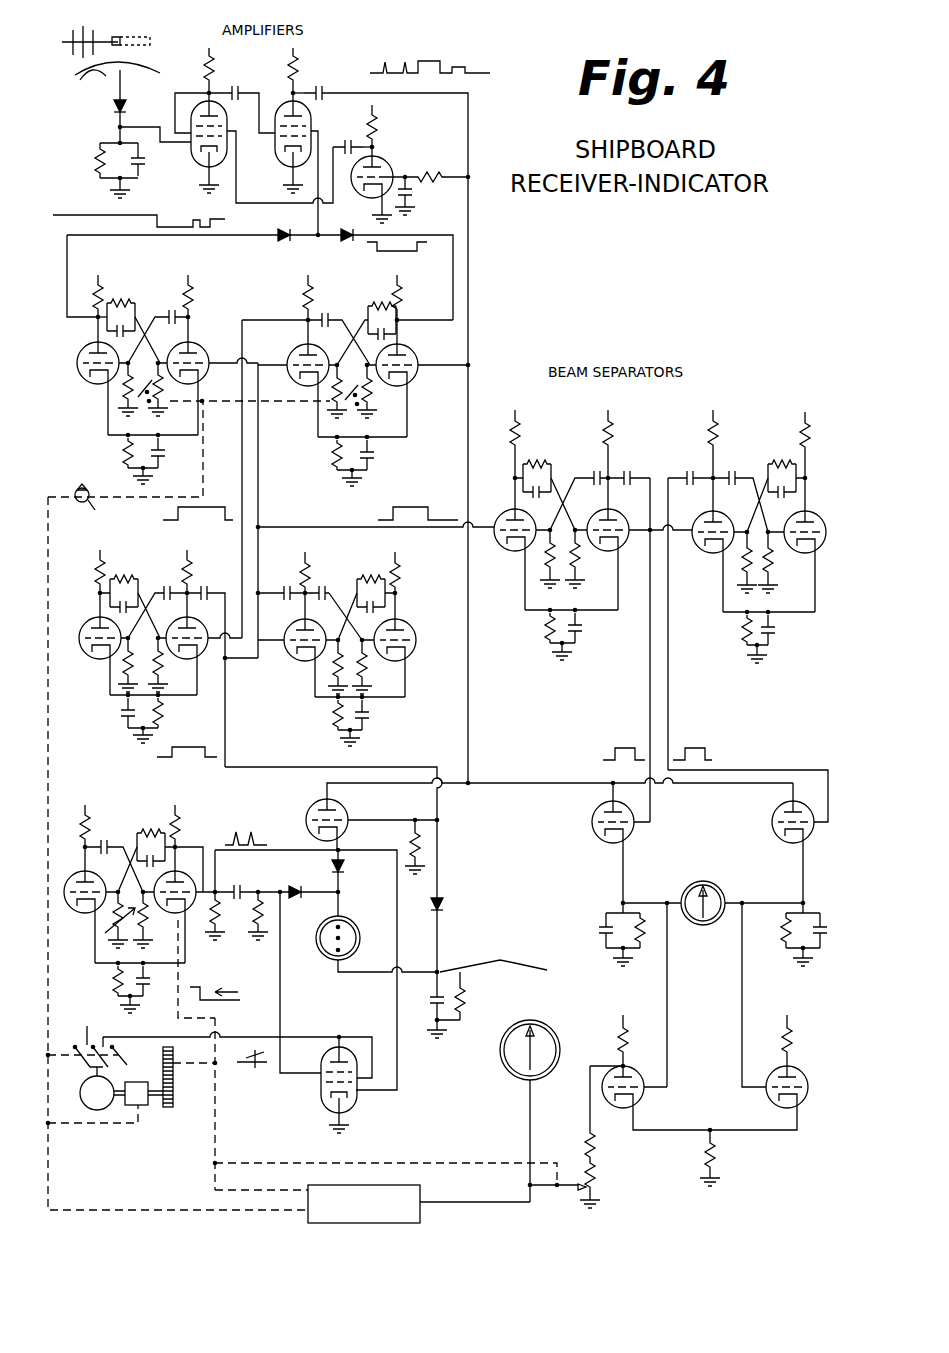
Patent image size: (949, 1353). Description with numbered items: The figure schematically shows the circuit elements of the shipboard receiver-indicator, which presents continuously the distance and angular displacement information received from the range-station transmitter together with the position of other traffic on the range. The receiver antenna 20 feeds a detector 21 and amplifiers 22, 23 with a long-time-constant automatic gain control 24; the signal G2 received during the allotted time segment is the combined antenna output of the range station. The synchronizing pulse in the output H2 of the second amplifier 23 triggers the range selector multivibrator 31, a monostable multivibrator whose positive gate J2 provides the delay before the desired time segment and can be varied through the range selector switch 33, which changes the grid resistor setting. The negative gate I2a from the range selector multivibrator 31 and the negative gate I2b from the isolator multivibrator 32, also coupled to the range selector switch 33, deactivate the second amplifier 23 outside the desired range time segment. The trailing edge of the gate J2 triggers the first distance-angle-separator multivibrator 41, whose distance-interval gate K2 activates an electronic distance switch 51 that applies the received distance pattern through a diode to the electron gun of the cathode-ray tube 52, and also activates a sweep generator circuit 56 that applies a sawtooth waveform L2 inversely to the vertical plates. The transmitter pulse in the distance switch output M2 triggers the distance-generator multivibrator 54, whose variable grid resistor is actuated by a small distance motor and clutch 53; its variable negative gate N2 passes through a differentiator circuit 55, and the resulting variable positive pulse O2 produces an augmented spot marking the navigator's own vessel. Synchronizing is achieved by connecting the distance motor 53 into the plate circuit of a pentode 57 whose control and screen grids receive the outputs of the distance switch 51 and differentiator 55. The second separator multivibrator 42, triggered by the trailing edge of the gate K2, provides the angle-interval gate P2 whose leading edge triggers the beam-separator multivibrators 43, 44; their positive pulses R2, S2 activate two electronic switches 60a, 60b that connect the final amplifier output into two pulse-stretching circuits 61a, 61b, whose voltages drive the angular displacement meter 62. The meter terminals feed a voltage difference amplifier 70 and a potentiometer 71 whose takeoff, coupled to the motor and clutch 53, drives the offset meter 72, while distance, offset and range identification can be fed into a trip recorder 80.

The receiver antenna 20 is at (115, 102).
The detector 21 is at (96, 164).
The amplifier 22 is at (245, 80).
The second amplifier 23 is at (328, 80).
The automatic gain control 24 is at (430, 166).
The range selector multivibrator 31 is at (360, 313).
The isolator multivibrator 32 is at (158, 300).
The range selector switch 33 is at (174, 805).
The first distance-angle-separator multivibrator 41 is at (85, 725).
The second distance-angle-separator multivibrator 42 is at (415, 725).
The beam-separator multivibrator 43 is at (626, 583).
The beam-separator multivibrator 44 is at (828, 583).
The distance switch 51 is at (378, 803).
The cathode-ray tube 52 is at (315, 931).
The distance motor and clutch 53 is at (178, 1133).
The distance-generator multivibrator 54 is at (93, 988).
The differentiator circuit 55 is at (218, 985).
The sweep generator circuit 56 is at (475, 1048).
The pentode 57 is at (313, 1068).
The electronic switch 60a is at (590, 843).
The electronic switch 60b is at (842, 868).
The pulse-stretching circuit 61a is at (595, 915).
The pulse-stretching circuit 61b is at (845, 915).
The angular displacement meter 62 is at (718, 950).
The voltage difference amplifier 70 is at (718, 1121).
The potentiometer 71 is at (576, 1163).
The offset meter 72 is at (585, 1048).
The trip recorder 80 is at (455, 1196).
The received signal G2 is at (131, 36).
The second amplifier output H2 is at (469, 63).
The negative gate I2a is at (402, 259).
The negative gate I2b is at (139, 211).
The positive gate J2 is at (236, 497).
The distance-interval gate K2 is at (217, 718).
The angle-interval gate P2 is at (376, 507).
The positive pulse R2 is at (606, 752).
The positive pulse S2 is at (700, 747).
The distance switch output M2 is at (252, 836).
The variable negative gate N2 is at (222, 1003).
The variable positive pulse O2 is at (240, 1068).
The sawtooth waveform L2 is at (470, 962).